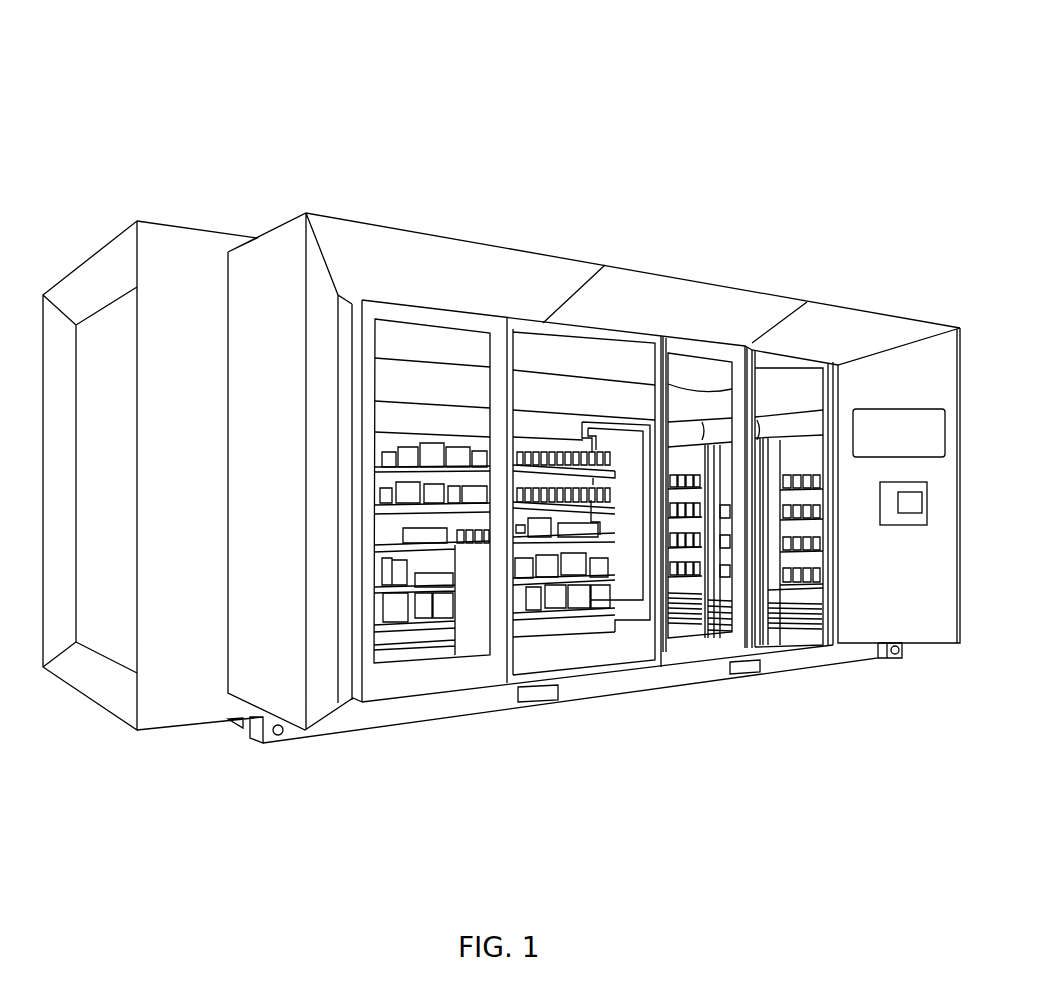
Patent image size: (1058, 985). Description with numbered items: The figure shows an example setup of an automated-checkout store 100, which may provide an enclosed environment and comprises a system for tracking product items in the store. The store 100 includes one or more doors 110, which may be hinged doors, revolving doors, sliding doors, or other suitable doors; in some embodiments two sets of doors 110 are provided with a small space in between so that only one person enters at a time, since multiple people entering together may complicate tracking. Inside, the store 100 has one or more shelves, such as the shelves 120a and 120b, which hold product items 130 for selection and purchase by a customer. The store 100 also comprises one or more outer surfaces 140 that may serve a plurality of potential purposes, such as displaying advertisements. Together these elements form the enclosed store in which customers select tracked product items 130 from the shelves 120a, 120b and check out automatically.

The automated-checkout store 100 is at (522, 44).
The doors 110 is at (712, 645).
The shelf 120a is at (548, 428).
The shelf 120b is at (783, 420).
The product items 130 is at (440, 490).
The outer surfaces 140 is at (107, 523).